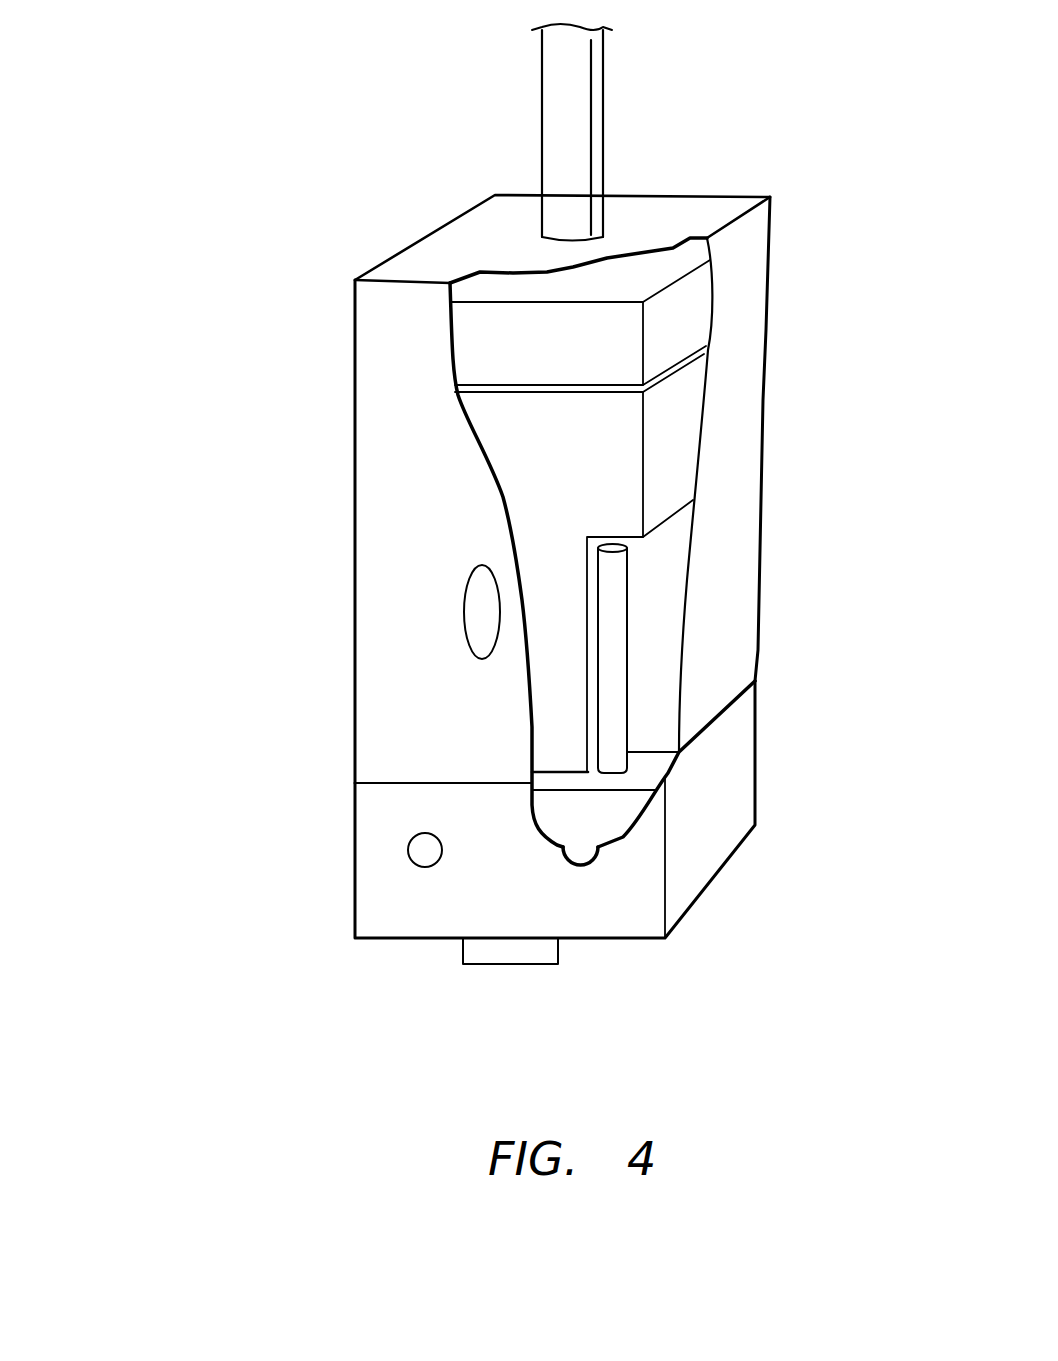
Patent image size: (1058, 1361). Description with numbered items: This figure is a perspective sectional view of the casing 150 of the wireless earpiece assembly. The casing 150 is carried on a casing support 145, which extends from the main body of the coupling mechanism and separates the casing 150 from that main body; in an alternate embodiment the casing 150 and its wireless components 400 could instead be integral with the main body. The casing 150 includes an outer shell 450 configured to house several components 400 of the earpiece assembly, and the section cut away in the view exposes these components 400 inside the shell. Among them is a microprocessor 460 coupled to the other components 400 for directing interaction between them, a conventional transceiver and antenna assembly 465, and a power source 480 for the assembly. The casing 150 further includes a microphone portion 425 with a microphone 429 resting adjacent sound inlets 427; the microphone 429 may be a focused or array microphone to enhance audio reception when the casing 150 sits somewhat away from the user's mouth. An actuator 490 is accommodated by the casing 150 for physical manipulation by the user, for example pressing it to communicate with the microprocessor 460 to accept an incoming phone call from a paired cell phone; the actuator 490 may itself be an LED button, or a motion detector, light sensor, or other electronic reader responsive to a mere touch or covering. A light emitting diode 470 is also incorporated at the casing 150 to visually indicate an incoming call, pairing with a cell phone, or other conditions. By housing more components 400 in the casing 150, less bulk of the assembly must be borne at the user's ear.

The casing 150 is at (460, 537).
The casing support 145 is at (593, 100).
The components 400 is at (514, 449).
The outer shell 450 is at (745, 573).
The power source 480 is at (672, 337).
The microprocessor 460 is at (665, 432).
The transceiver and antenna assembly 465 is at (613, 595).
The light emitting diode (LED) 470 is at (475, 610).
The microphone portion 425 is at (745, 785).
The sound inlets 427 is at (412, 847).
The microphone 429 is at (583, 818).
The actuator 490 is at (517, 952).